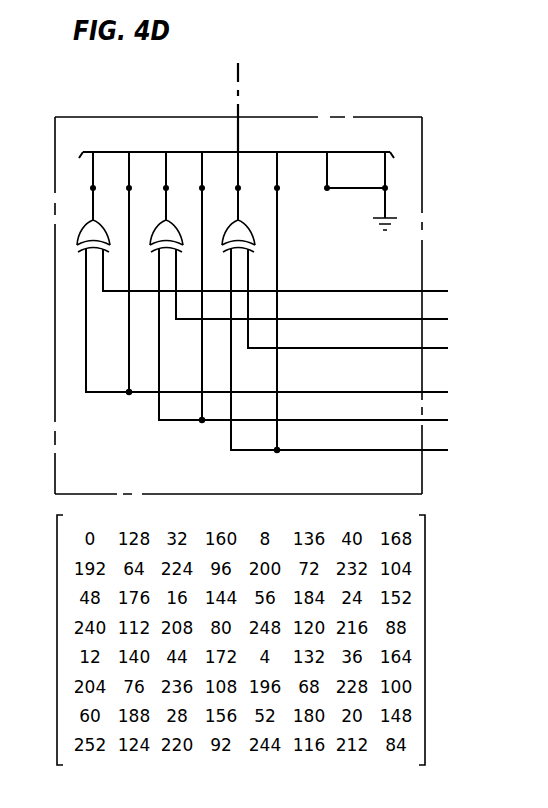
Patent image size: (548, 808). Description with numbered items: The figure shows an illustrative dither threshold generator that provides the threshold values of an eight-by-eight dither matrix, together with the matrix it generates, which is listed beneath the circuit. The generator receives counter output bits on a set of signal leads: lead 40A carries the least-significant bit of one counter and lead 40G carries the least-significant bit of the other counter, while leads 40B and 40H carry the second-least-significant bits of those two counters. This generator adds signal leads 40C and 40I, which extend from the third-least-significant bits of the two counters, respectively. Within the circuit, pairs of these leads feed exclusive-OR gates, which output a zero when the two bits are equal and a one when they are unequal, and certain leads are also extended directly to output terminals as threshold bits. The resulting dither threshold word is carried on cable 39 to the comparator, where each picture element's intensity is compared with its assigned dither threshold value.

The cable 39 is at (241, 78).
The lead 40A is at (275, 270).
The lead 40B is at (312, 284).
The signal lead 40C is at (348, 299).
The lead 40G is at (267, 321).
The lead 40H is at (303, 335).
The signal lead 40I is at (339, 350).